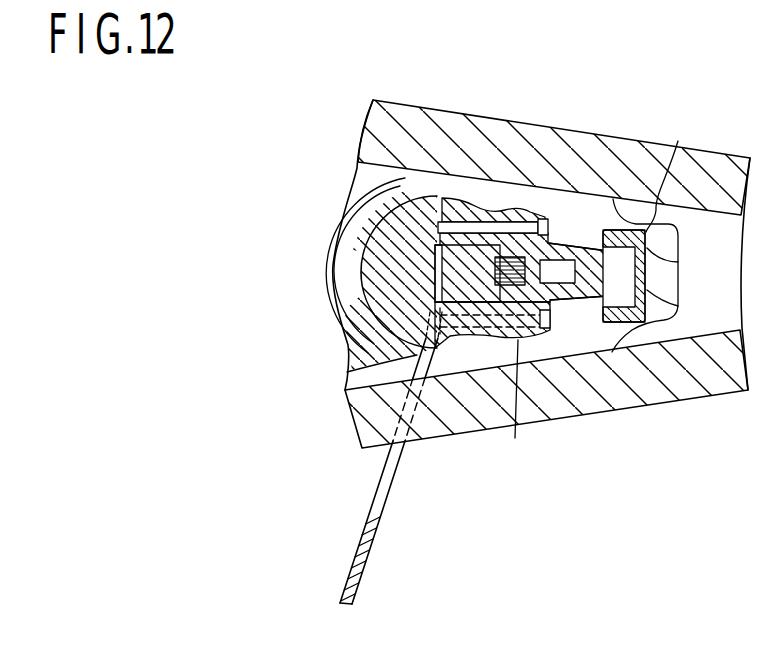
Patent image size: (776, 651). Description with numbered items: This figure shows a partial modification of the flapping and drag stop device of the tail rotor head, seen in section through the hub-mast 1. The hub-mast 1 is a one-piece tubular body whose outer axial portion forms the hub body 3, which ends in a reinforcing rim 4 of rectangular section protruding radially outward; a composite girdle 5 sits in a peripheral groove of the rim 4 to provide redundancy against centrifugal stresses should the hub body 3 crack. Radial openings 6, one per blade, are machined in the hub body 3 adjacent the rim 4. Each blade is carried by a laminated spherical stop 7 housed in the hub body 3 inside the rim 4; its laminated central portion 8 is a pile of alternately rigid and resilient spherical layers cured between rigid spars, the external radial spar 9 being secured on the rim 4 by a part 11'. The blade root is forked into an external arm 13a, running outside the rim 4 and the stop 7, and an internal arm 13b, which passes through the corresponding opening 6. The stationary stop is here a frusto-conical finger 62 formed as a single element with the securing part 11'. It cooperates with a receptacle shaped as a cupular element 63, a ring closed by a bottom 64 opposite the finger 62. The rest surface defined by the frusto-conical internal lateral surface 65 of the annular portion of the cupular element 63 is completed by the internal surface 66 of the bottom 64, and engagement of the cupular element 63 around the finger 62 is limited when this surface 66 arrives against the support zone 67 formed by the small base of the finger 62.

The hub-mast 1 is at (338, 567).
The hub body 3 is at (374, 548).
The reinforcing rim 4 is at (448, 208).
The girdle 5 is at (551, 236).
The radial opening 6 is at (393, 470).
The laminated spherical stop 7 is at (325, 262).
The laminated central portion 8 is at (354, 203).
The external radial spar 9 is at (390, 315).
The securing part 11' is at (513, 403).
The external arm 13a is at (562, 134).
The internal arm 13b is at (683, 388).
The stationary stop finger 62 is at (579, 288).
The cupular element 63 is at (622, 231).
The bottom 64 is at (678, 306).
The frusto-conical internal lateral surface 65 is at (673, 175).
The internal surface 66 is at (662, 275).
The support zone 67 is at (673, 247).